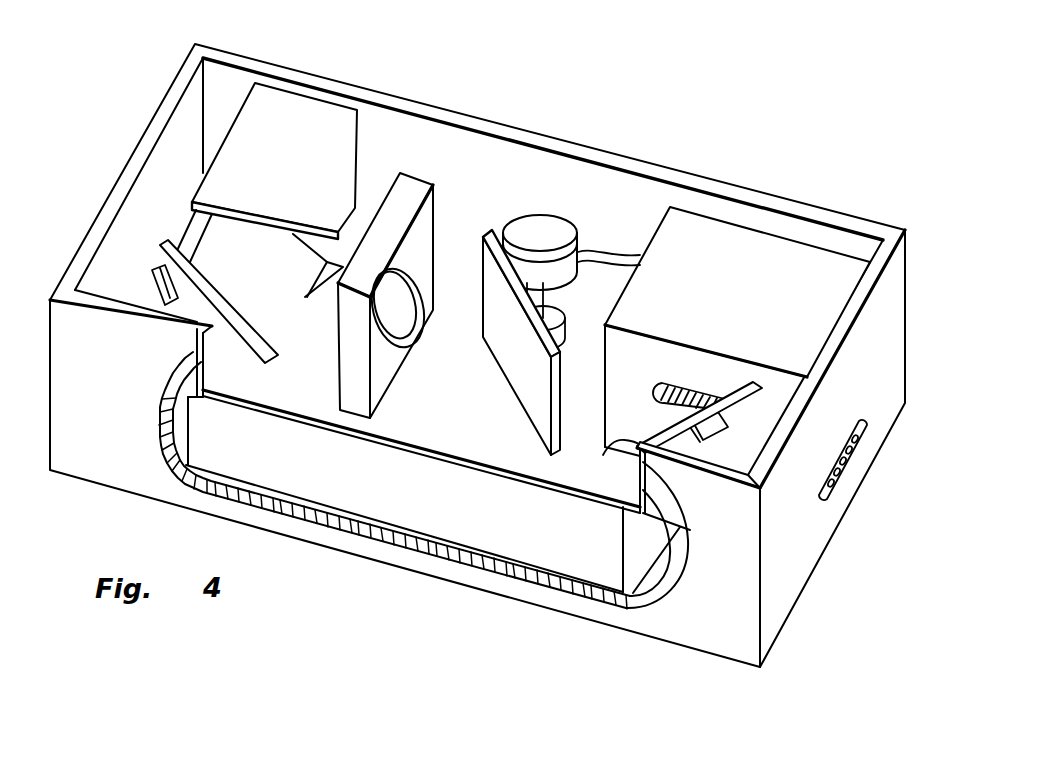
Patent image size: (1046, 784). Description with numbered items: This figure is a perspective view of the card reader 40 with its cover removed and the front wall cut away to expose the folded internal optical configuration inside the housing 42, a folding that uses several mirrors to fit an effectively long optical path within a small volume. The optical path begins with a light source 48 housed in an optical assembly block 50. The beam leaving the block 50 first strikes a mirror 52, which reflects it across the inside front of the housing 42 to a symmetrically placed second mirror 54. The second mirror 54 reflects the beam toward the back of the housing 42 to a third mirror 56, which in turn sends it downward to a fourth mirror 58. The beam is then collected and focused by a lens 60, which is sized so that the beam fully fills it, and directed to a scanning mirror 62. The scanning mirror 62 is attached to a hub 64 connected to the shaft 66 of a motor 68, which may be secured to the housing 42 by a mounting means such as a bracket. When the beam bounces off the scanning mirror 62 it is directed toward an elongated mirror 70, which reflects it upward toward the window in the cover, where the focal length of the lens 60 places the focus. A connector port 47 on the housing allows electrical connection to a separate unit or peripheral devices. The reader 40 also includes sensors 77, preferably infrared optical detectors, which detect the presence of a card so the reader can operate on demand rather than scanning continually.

The card reader 40 is at (664, 132).
The housing 42 is at (668, 630).
The connector port 47 is at (853, 468).
The light source 48 is at (643, 397).
The optical assembly block 50 is at (753, 250).
The mirror 52 is at (623, 444).
The second mirror 54 is at (206, 370).
The third mirror 56 is at (265, 229).
The fourth mirror 58 is at (280, 327).
The lens 60 is at (398, 323).
The scanning mirror 62 is at (488, 235).
The hub 64 is at (557, 341).
The shaft 66 is at (546, 297).
The motor 68 is at (563, 228).
The elongated mirror 70 is at (465, 453).
The sensors 77 is at (152, 279).